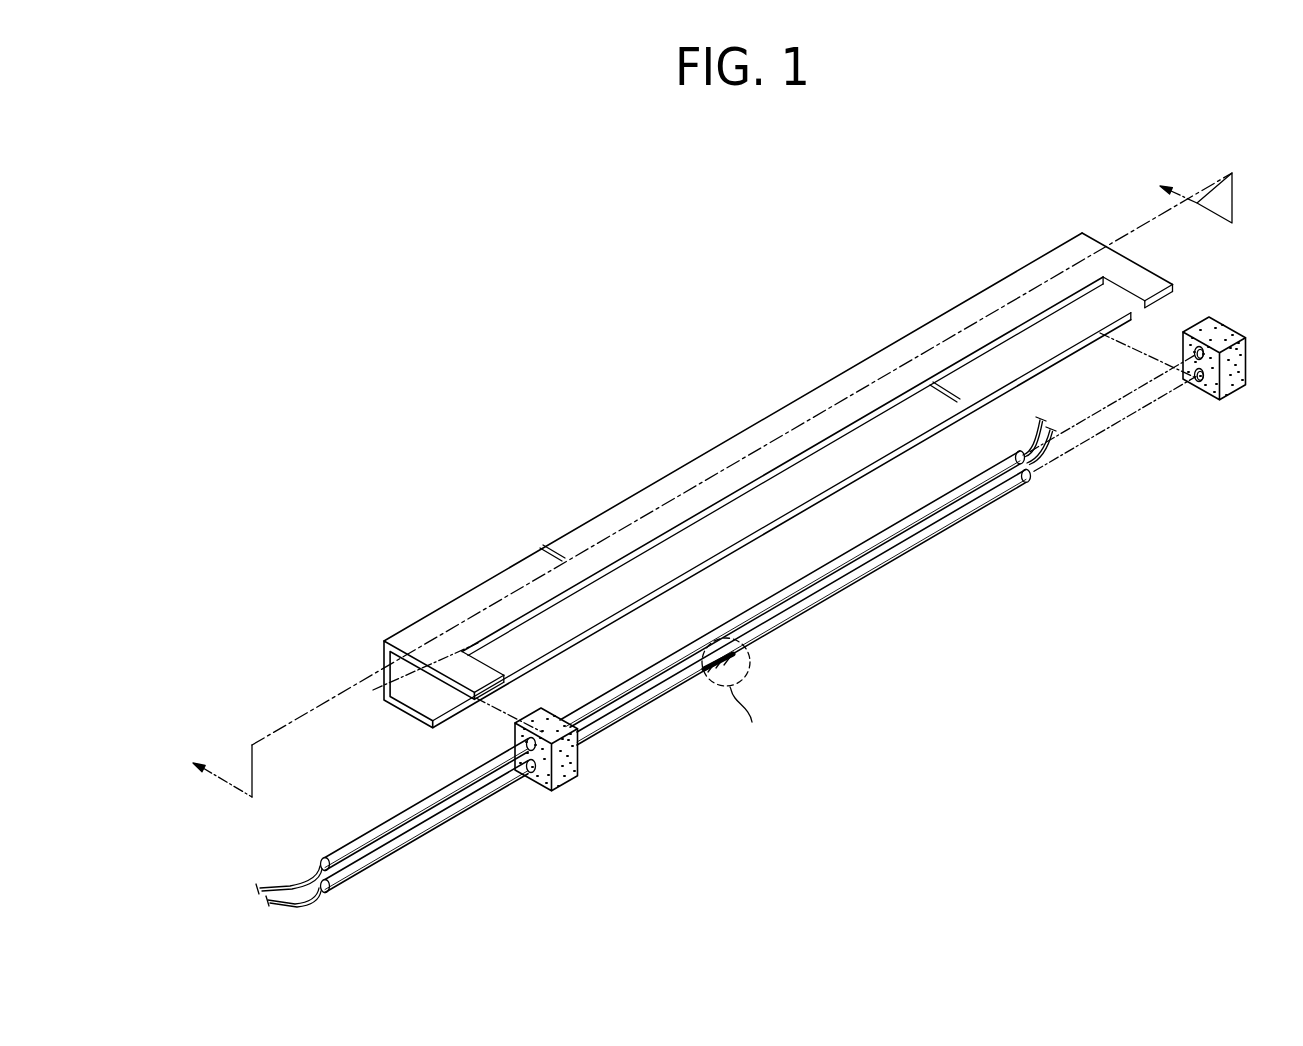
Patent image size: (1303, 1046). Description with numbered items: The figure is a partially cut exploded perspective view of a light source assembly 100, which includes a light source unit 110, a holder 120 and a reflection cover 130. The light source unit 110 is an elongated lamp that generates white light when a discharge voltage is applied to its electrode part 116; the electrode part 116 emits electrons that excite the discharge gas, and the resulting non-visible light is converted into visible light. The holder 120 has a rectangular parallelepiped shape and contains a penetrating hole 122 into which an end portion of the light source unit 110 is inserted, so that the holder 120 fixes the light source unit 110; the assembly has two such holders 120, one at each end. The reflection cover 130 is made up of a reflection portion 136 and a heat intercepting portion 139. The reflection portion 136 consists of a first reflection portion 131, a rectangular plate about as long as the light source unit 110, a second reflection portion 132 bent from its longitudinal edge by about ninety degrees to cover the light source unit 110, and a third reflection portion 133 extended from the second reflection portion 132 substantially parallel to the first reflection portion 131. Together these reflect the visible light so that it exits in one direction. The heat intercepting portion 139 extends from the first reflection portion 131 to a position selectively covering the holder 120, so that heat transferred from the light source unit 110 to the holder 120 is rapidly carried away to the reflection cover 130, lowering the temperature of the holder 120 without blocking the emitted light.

The light source assembly 100 is at (668, 382).
The light source unit 110 is at (840, 611).
The electrode part 116 is at (325, 858).
The holder 120 is at (1222, 326).
The penetrating hole 122 is at (1193, 382).
The reflection cover 130 is at (590, 510).
The first reflection portion 131 is at (398, 630).
The second reflection portion 132 is at (382, 672).
The third reflection portion 133 is at (394, 723).
The reflection portion 136 is at (280, 622).
The heat intercepting portion 139 is at (1147, 278).